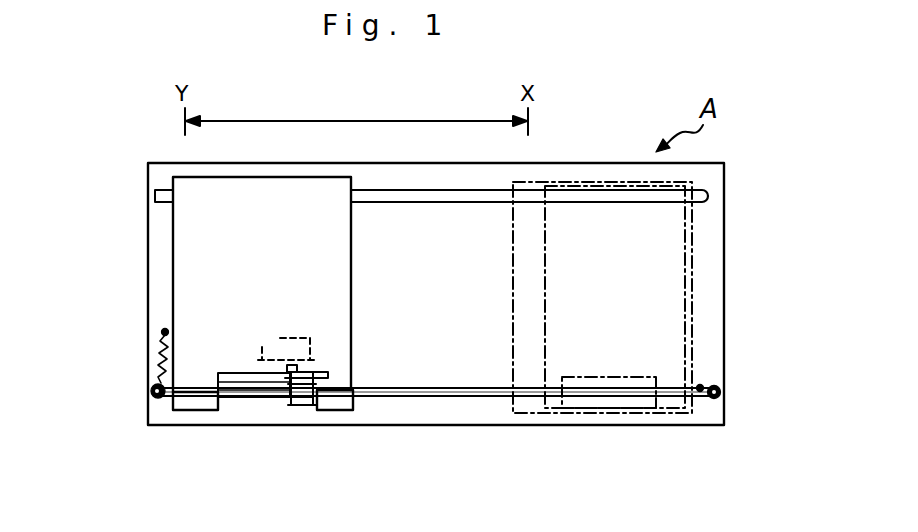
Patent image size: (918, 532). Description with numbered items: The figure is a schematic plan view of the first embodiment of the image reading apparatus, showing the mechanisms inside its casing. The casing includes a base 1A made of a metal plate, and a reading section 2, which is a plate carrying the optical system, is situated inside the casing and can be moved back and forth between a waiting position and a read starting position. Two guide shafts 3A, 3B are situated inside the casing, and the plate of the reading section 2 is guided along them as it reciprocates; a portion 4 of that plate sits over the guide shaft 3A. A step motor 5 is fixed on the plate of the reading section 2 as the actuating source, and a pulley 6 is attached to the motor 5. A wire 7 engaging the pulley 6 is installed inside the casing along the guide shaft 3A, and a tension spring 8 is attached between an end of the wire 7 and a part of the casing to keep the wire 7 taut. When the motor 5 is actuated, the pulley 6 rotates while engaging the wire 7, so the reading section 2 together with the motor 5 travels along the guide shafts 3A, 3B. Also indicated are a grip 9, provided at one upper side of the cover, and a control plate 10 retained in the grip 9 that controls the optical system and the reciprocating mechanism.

The base 1A is at (724, 327).
The reading section 2 is at (193, 208).
The guide shaft 3A is at (455, 400).
The guide shaft 3B is at (427, 195).
The portion of the plate 4 is at (185, 405).
The step motor 5 is at (270, 352).
The pulley 6 is at (302, 406).
The wire 7 is at (156, 387).
The tension spring 8 is at (160, 332).
The grip 9 is at (703, 384).
The control plate 10 is at (684, 217).